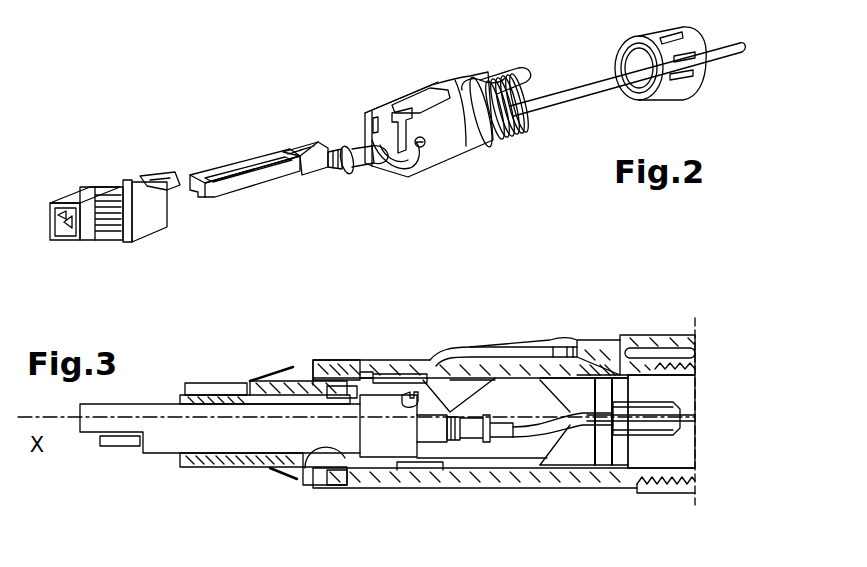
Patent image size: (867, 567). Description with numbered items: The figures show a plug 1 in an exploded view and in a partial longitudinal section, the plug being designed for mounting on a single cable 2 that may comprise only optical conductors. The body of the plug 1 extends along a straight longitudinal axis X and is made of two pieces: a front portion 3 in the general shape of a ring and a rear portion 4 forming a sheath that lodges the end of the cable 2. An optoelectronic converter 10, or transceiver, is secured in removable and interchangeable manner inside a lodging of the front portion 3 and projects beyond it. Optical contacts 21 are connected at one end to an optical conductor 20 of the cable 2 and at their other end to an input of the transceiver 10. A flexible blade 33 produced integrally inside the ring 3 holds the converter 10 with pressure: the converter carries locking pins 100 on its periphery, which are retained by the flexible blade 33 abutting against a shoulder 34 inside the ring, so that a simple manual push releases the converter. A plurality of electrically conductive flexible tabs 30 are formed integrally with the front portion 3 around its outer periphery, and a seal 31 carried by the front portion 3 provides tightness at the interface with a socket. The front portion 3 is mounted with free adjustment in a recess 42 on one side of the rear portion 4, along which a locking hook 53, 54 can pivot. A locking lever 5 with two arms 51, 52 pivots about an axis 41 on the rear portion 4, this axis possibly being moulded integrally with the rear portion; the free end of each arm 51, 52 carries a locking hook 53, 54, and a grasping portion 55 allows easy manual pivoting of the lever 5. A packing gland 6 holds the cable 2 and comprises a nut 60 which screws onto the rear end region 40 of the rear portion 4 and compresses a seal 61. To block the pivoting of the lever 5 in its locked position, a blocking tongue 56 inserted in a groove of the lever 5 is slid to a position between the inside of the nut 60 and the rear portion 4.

In FIG. 2, the plug 1 is at (257, 108).
In FIG. 3, the plug 1 is at (418, 323).
In FIG. 3, the cable 2 is at (688, 428).
In FIG. 2, the front portion 3 is at (97, 240).
In FIG. 3, the front portion 3 is at (184, 398).
In FIG. 2, the rear portion 4 is at (398, 106).
In FIG. 3, the rear portion 4 is at (408, 486).
In FIG. 2, the locking lever 5 is at (446, 92).
In FIG. 3, the locking lever 5 is at (450, 352).
In FIG. 3, the packing gland 6 is at (712, 563).
In FIG. 2, the optoelectronic converter 10 is at (236, 168).
In FIG. 3, the optoelectronic converter 10 is at (160, 456).
In FIG. 2, the optical conductor 20 is at (362, 160).
In FIG. 3, the optical conductor 20 is at (575, 462).
In FIG. 2, the optical contacts 21 is at (323, 152).
In FIG. 3, the optical contacts 21 is at (485, 448).
In FIG. 2, the flexible tabs 30 is at (108, 188).
In FIG. 3, the flexible tabs 30 is at (272, 374).
In FIG. 2, the seal 31 is at (116, 188).
In FIG. 3, the seal 31 is at (338, 362).
In FIG. 3, the flexible blade 33 is at (310, 378).
In FIG. 3, the shoulder 34 is at (352, 462).
In FIG. 2, the threaded section 40 is at (522, 120).
In FIG. 3, the threaded section 40 is at (662, 494).
In FIG. 2, the pivoting axis 41 is at (440, 142).
In FIG. 3, the recess 42 is at (368, 372).
In FIG. 2, the arm 51 is at (486, 130).
In FIG. 2, the arm 52 is at (358, 126).
In FIG. 2, the locking hook 53 is at (412, 160).
In FIG. 2, the locking hook 54 is at (344, 130).
In FIG. 2, the grasping portion 55 is at (500, 76).
In FIG. 3, the grasping portion 55 is at (652, 338).
In FIG. 3, the blocking tongue 56 is at (583, 343).
In FIG. 2, the nut 60 is at (678, 90).
In FIG. 3, the nut 60 is at (690, 494).
In FIG. 3, the seal 61 is at (683, 460).
In FIG. 3, the locking pins 100 is at (320, 470).